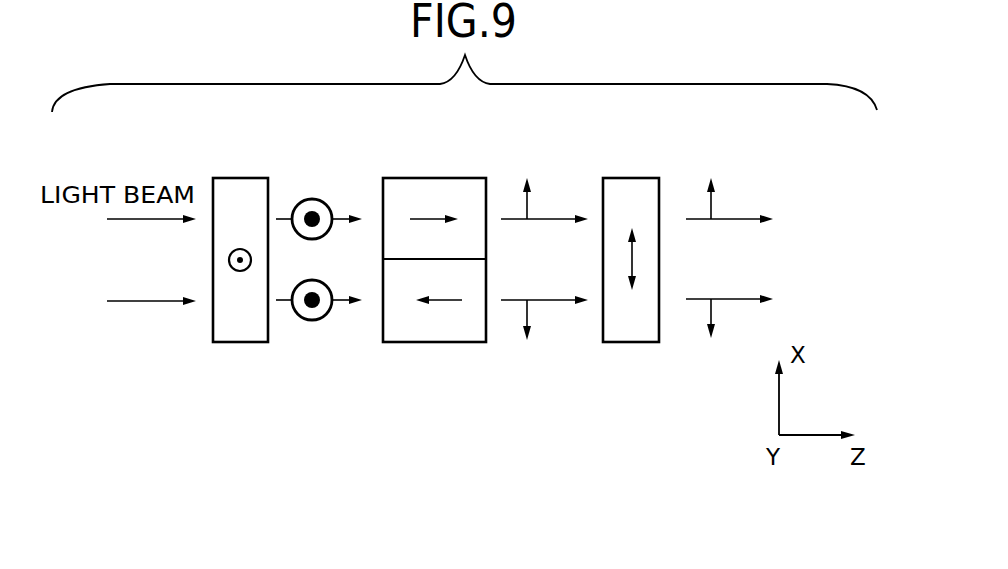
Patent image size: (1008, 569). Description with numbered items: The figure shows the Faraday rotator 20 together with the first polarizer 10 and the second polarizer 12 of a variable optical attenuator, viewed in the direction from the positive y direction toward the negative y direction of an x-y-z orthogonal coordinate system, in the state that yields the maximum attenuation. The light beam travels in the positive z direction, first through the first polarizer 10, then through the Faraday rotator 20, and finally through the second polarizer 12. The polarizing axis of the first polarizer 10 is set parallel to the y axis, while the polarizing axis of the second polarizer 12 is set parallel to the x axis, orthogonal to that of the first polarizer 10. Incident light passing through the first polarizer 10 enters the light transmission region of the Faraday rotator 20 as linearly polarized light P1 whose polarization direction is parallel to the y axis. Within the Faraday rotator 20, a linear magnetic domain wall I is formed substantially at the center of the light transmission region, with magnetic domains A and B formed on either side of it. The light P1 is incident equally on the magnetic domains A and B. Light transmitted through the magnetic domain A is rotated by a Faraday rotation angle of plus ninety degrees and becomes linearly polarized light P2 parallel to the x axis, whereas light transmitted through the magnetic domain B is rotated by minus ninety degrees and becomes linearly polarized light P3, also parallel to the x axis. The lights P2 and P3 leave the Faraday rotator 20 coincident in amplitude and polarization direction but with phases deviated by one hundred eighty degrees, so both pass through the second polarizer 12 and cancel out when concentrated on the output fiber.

The first polarizer 10 is at (240, 178).
The Faraday rotator 20 is at (415, 178).
The magnetic domain A is at (468, 186).
The magnetic domain B is at (463, 342).
The magnetic domain wall I is at (486, 259).
The second polarizer 12 is at (628, 178).
The linearly polarized light P1 is at (296, 244).
The linearly polarized light P2 is at (547, 193).
The linearly polarized light P3 is at (548, 334).